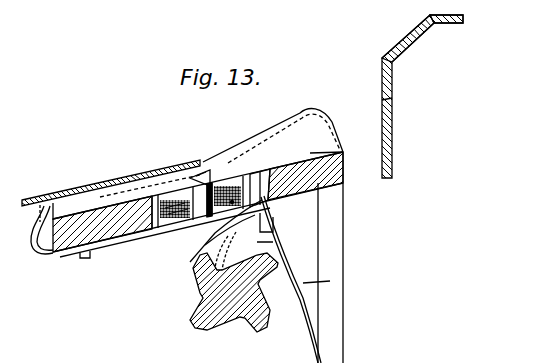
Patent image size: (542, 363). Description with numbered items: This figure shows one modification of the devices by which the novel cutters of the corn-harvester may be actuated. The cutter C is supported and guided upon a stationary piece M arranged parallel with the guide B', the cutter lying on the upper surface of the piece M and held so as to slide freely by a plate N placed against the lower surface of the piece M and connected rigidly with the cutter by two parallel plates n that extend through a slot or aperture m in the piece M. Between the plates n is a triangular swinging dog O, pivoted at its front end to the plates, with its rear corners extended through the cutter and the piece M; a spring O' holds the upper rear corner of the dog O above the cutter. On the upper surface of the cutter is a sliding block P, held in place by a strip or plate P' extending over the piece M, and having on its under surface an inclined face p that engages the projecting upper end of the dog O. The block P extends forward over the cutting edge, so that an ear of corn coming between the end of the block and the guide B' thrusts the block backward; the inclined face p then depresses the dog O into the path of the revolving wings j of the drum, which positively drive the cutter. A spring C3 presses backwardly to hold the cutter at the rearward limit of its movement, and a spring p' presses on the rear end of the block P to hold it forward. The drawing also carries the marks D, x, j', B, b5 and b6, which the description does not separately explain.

The strip or plate P' is at (111, 176).
The spring p' is at (42, 241).
The stationary piece M is at (106, 240).
The swinging dog O is at (165, 235).
The plate N is at (178, 222).
The parallel plates n is at (248, 190).
The slot or aperture m is at (263, 182).
The cutter C is at (318, 156).
The frame top D is at (339, 155).
The sliding block P is at (221, 153).
The inclined face p is at (188, 149).
The rod x is at (220, 158).
The spring O' is at (279, 227).
The lever j' is at (225, 251).
The wings j is at (231, 298).
The spring C3 is at (330, 282).
The bar B is at (422, 96).
The guide B' is at (376, 106).
The bar bend b5 is at (408, 38).
The bar tip b6 is at (446, 11).